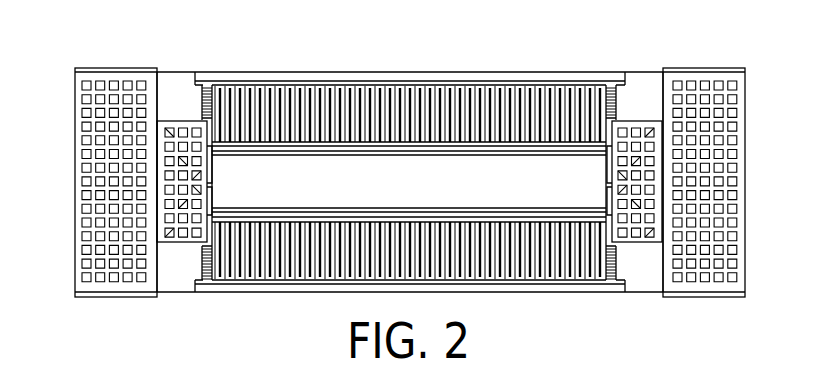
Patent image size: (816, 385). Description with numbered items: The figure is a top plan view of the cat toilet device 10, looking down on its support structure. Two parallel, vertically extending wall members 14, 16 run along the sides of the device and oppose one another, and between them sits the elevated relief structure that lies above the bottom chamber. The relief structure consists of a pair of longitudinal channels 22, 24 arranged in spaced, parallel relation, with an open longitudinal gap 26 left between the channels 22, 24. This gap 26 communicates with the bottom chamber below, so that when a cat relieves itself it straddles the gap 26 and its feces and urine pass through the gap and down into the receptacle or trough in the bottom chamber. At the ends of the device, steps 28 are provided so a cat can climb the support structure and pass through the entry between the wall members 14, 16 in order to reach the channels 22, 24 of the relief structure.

The cat toilet device 10 is at (108, 40).
The wall member 14 is at (260, 72).
The wall member 16 is at (253, 293).
The longitudinal channel 22 is at (512, 270).
The longitudinal channel 24 is at (500, 93).
The longitudinal gap 26 is at (391, 173).
The step 28 is at (100, 139).